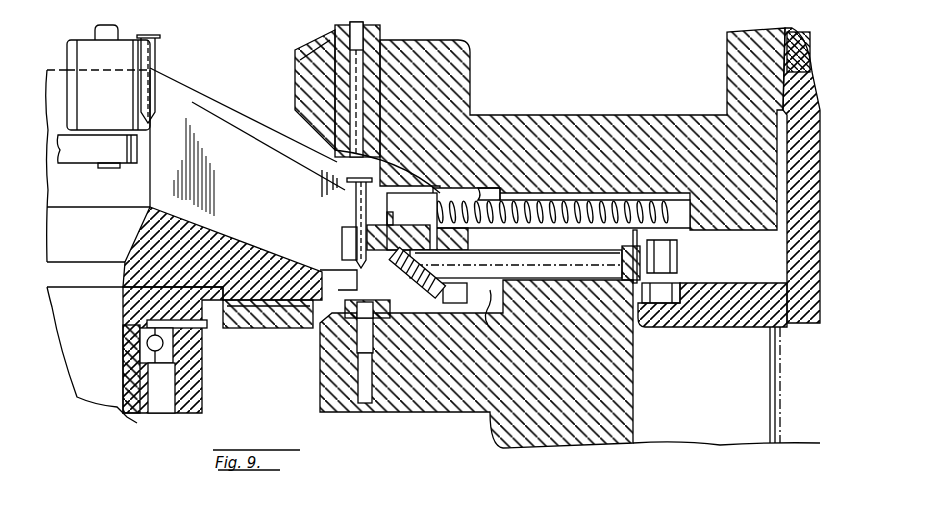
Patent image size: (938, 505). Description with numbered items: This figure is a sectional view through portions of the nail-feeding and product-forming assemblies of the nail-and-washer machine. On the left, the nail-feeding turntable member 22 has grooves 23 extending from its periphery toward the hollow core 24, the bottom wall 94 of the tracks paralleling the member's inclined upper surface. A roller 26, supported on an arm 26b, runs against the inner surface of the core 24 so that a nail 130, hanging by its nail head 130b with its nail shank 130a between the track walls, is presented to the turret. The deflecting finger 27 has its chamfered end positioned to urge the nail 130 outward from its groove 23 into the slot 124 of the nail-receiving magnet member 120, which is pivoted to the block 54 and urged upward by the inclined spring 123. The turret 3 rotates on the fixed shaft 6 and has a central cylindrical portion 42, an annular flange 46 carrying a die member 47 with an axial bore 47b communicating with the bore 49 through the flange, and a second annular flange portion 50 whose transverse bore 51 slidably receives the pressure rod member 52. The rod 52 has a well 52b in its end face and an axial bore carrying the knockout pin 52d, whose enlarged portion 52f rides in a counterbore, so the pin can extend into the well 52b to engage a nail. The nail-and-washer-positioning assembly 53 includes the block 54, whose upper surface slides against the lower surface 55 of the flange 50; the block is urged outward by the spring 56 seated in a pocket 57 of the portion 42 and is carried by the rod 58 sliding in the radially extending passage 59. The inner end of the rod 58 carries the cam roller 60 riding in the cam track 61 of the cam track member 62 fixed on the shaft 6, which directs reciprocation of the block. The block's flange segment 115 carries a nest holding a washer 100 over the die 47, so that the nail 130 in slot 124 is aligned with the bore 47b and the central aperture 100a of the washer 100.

The turret 3 is at (429, 425).
The fixed shaft 6 is at (770, 382).
The turntable member 22 is at (207, 71).
The grooves 23 is at (200, 102).
The hollow core 24 is at (151, 151).
The roller 26 is at (66, 46).
The arm 26b is at (75, 160).
The deflecting finger 27 is at (345, 250).
The central cylindrical portion 42 is at (492, 428).
The annular flange 46 is at (322, 400).
The die member 47 is at (330, 375).
The axial bore 47b is at (395, 345).
The bore 49 is at (370, 408).
The second annular flange portion 50 is at (462, 64).
The transverse bore 51 is at (380, 84).
The pressure rod member 52 is at (296, 98).
The well 52b is at (322, 182).
The knockout pin 52d is at (306, 68).
The enlarged portion of knockout pin 52f is at (352, 26).
The nail-and-washer-positioning assembly 53 is at (470, 190).
The block 54 is at (438, 180).
The lower surface 55 is at (500, 197).
The spring 56 is at (585, 198).
The pocket 57 is at (600, 190).
The rod 58 is at (474, 310).
The radially extending passage 59 is at (476, 364).
The cam roller 60 is at (680, 272).
The cam track 61 is at (632, 300).
The cam track member 62 is at (692, 330).
The bottom wall of tracks 94 is at (232, 222).
The washer 100 is at (292, 336).
The central aperture 100a is at (330, 340).
The flange segment 115 is at (420, 305).
The nail-receiving magnet member 120 is at (342, 232).
The inclined spring 123 is at (440, 268).
The slot 124 is at (392, 232).
The nail 130 is at (160, 60).
The nail shank 130a is at (356, 200).
The nail head 130b is at (390, 158).